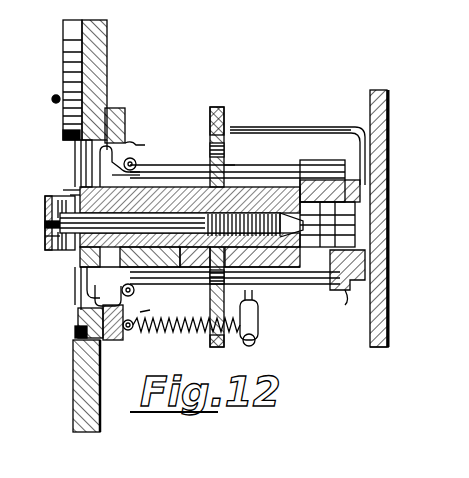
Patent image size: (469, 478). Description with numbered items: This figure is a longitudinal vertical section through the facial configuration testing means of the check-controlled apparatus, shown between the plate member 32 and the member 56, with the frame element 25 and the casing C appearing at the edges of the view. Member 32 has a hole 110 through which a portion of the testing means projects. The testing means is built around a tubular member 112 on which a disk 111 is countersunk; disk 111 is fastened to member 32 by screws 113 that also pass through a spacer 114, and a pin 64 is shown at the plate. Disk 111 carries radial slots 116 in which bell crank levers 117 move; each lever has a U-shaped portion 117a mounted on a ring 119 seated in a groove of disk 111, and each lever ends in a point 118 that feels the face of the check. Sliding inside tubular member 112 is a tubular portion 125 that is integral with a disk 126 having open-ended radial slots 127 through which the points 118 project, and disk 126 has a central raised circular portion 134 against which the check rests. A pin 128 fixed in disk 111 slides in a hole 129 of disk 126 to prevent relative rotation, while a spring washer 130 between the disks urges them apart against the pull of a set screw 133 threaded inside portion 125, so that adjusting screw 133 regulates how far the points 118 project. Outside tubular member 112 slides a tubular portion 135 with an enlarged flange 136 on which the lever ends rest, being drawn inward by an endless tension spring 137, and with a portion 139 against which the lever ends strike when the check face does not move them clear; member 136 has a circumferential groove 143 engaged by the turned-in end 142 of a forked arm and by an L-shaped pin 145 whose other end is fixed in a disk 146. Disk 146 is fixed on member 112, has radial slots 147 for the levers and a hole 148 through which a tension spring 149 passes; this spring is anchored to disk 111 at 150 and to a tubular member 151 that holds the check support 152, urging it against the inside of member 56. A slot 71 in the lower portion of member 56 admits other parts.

The casing C is at (72, 40).
The member 32 is at (107, 40).
The pin 64 is at (53, 102).
The spacer 114 is at (108, 108).
The disk 111 is at (125, 112).
The bell crank levers 117 is at (125, 143).
The U-shaped portion 117a is at (78, 315).
The radial slots 116 is at (133, 145).
The radial slots 127 is at (75, 165).
The hole 110 is at (81, 160).
The points 118 is at (100, 170).
The spring washer 130 is at (63, 190).
The hole 129 is at (70, 195).
The member 56 is at (45, 203).
The slot 71 is at (45, 222).
The check support 152 is at (45, 236).
The disk 126 is at (75, 282).
The raised circular portion 134 is at (87, 290).
The screws 113 is at (75, 334).
The endless tension spring 137 is at (136, 160).
The tubular portion 125 is at (210, 170).
The pin 128 is at (147, 203).
The tubular member 112 is at (172, 203).
The set screw 133 is at (207, 224).
The disk 146 is at (224, 112).
The radially disposed slots 147 is at (228, 165).
The L-shaped pin 145 is at (295, 127).
The tubular portion 135 is at (305, 162).
The circumferential groove 143 is at (387, 130).
The frame 25 is at (393, 212).
The flange portion 136 is at (340, 290).
The portion 139 is at (345, 305).
The ring 119 is at (121, 300).
The turned-in end 142 is at (150, 297).
The spring anchorage 150 is at (131, 330).
The tension spring 149 is at (175, 335).
The hole 148 is at (217, 347).
The tubular member 151 is at (255, 342).